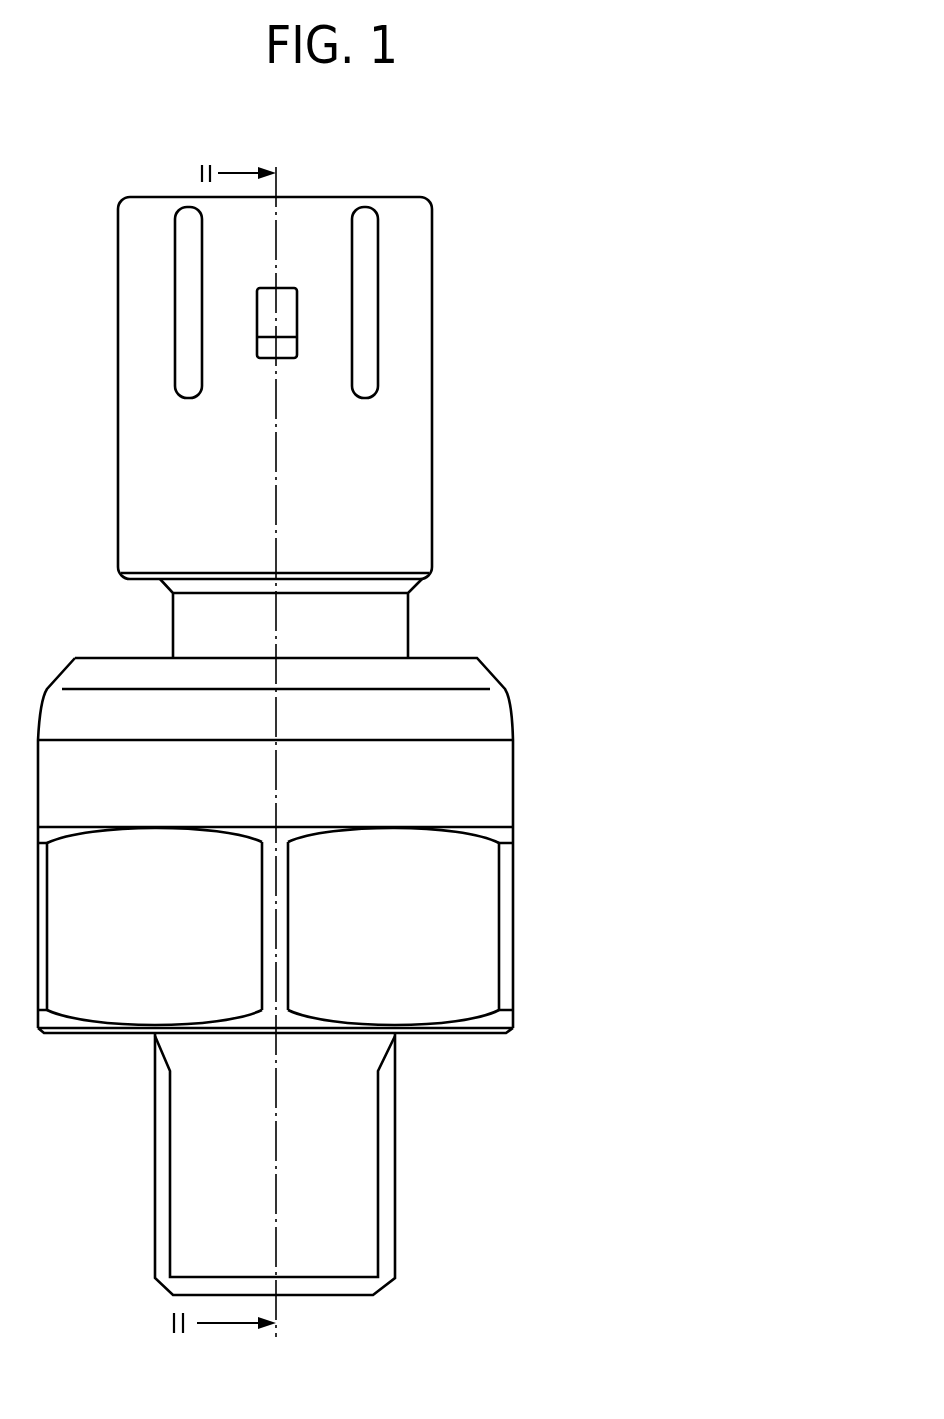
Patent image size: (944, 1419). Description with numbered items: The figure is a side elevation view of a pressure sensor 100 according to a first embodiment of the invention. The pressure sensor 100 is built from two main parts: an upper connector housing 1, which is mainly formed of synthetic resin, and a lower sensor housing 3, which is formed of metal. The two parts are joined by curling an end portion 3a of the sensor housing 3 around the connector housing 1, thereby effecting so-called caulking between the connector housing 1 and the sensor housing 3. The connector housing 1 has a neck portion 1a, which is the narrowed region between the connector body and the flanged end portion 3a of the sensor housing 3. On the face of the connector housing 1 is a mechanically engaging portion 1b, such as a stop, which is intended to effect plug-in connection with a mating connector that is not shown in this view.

The pressure sensor 100 is at (618, 193).
The connector housing 1 is at (398, 457).
The neck portion 1a is at (407, 635).
The mechanically engaging portion 1b is at (285, 323).
The sensor housing 3 is at (462, 953).
The end portion 3a is at (475, 677).